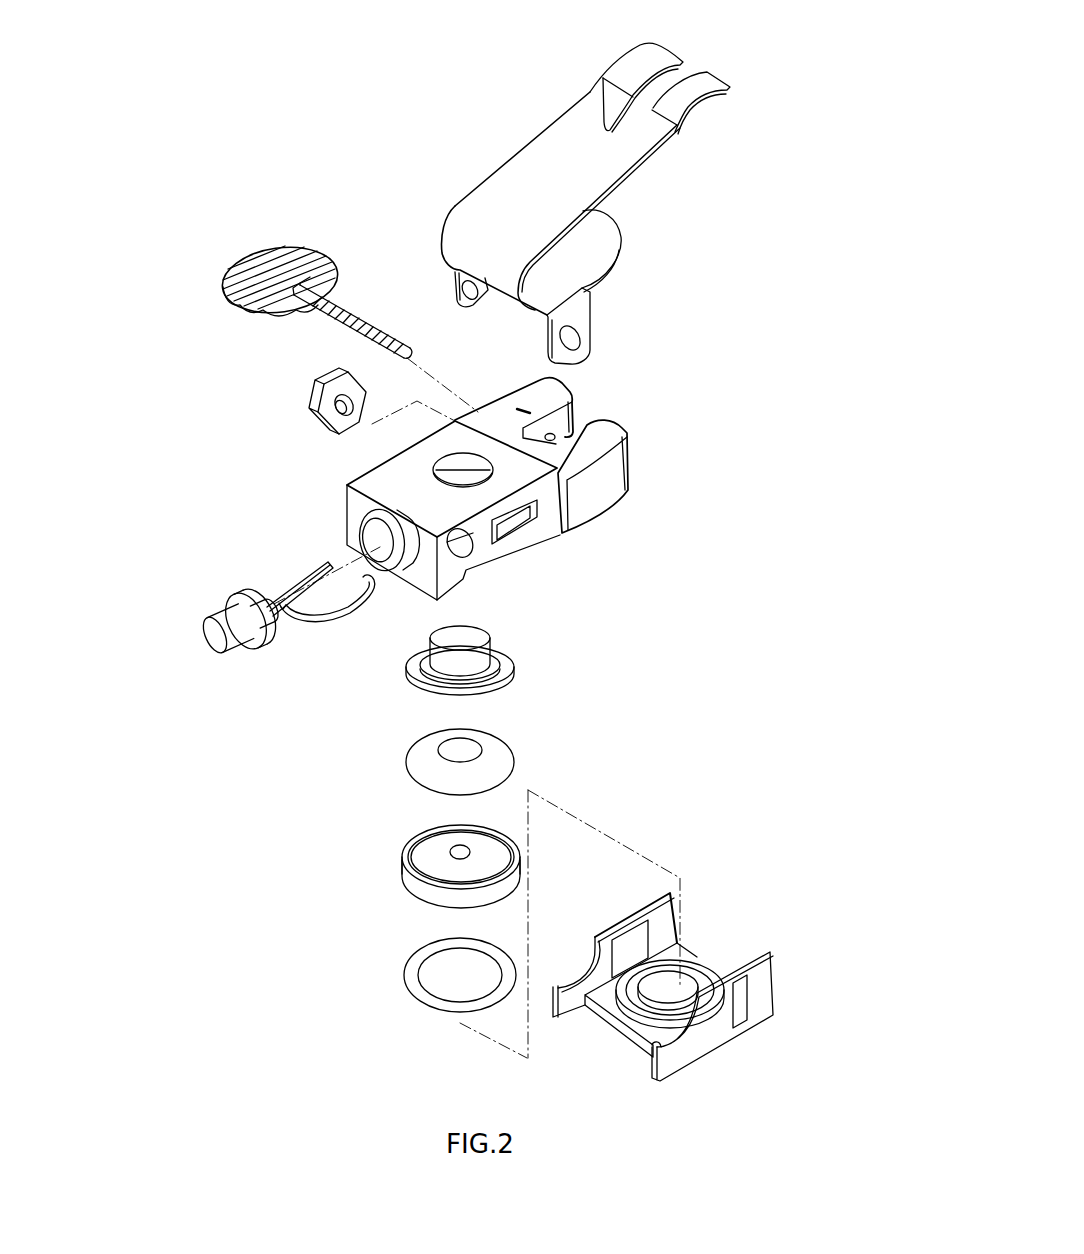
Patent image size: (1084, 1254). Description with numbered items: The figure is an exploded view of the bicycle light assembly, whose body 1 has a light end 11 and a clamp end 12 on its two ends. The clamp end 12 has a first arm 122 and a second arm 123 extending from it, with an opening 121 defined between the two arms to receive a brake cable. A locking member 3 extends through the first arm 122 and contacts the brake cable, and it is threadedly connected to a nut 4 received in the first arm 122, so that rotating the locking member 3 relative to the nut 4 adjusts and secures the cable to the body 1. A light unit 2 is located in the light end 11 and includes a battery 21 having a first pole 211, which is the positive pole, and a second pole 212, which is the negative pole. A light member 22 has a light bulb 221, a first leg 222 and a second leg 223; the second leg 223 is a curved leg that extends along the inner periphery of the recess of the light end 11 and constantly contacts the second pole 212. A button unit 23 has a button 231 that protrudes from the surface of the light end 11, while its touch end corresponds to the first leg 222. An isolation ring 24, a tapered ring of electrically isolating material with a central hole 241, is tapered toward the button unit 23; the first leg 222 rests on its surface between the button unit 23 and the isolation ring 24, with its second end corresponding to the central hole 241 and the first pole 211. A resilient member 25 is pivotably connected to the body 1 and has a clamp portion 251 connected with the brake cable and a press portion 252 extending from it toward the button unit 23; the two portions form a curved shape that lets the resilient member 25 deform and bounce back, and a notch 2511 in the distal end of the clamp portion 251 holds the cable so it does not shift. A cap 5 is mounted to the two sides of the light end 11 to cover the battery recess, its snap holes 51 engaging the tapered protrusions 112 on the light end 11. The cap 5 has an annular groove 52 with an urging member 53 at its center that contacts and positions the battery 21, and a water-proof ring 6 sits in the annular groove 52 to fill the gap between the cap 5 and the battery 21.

The body 1 is at (740, 558).
The light end 11 is at (522, 585).
The tapered protrusion 112 is at (510, 523).
The clamp end 12 is at (635, 503).
The opening 121 is at (567, 418).
The first arm 122 is at (565, 393).
The second arm 123 is at (637, 420).
The light unit 2 is at (252, 813).
The battery 21 is at (323, 888).
The first pole 211 is at (447, 850).
The second pole 212 is at (423, 907).
The light member 22 is at (218, 602).
The light bulb 221 is at (267, 640).
The first leg 222 is at (300, 570).
The second leg 223 is at (333, 625).
The button unit 23 is at (490, 687).
The button 231 is at (480, 633).
The isolation ring 24 is at (443, 777).
The central hole 241 is at (447, 753).
The resilient member 25 is at (515, 135).
The clamp portion 251 is at (500, 183).
The notch 2511 is at (672, 75).
The press portion 252 is at (607, 250).
The locking member 3 is at (263, 270).
The nut 4 is at (318, 425).
The cap 5 is at (690, 947).
The snap hole 51 is at (747, 1002).
The annular groove 52 is at (627, 1003).
The urging member 53 is at (693, 977).
The water-proof ring 6 is at (410, 972).